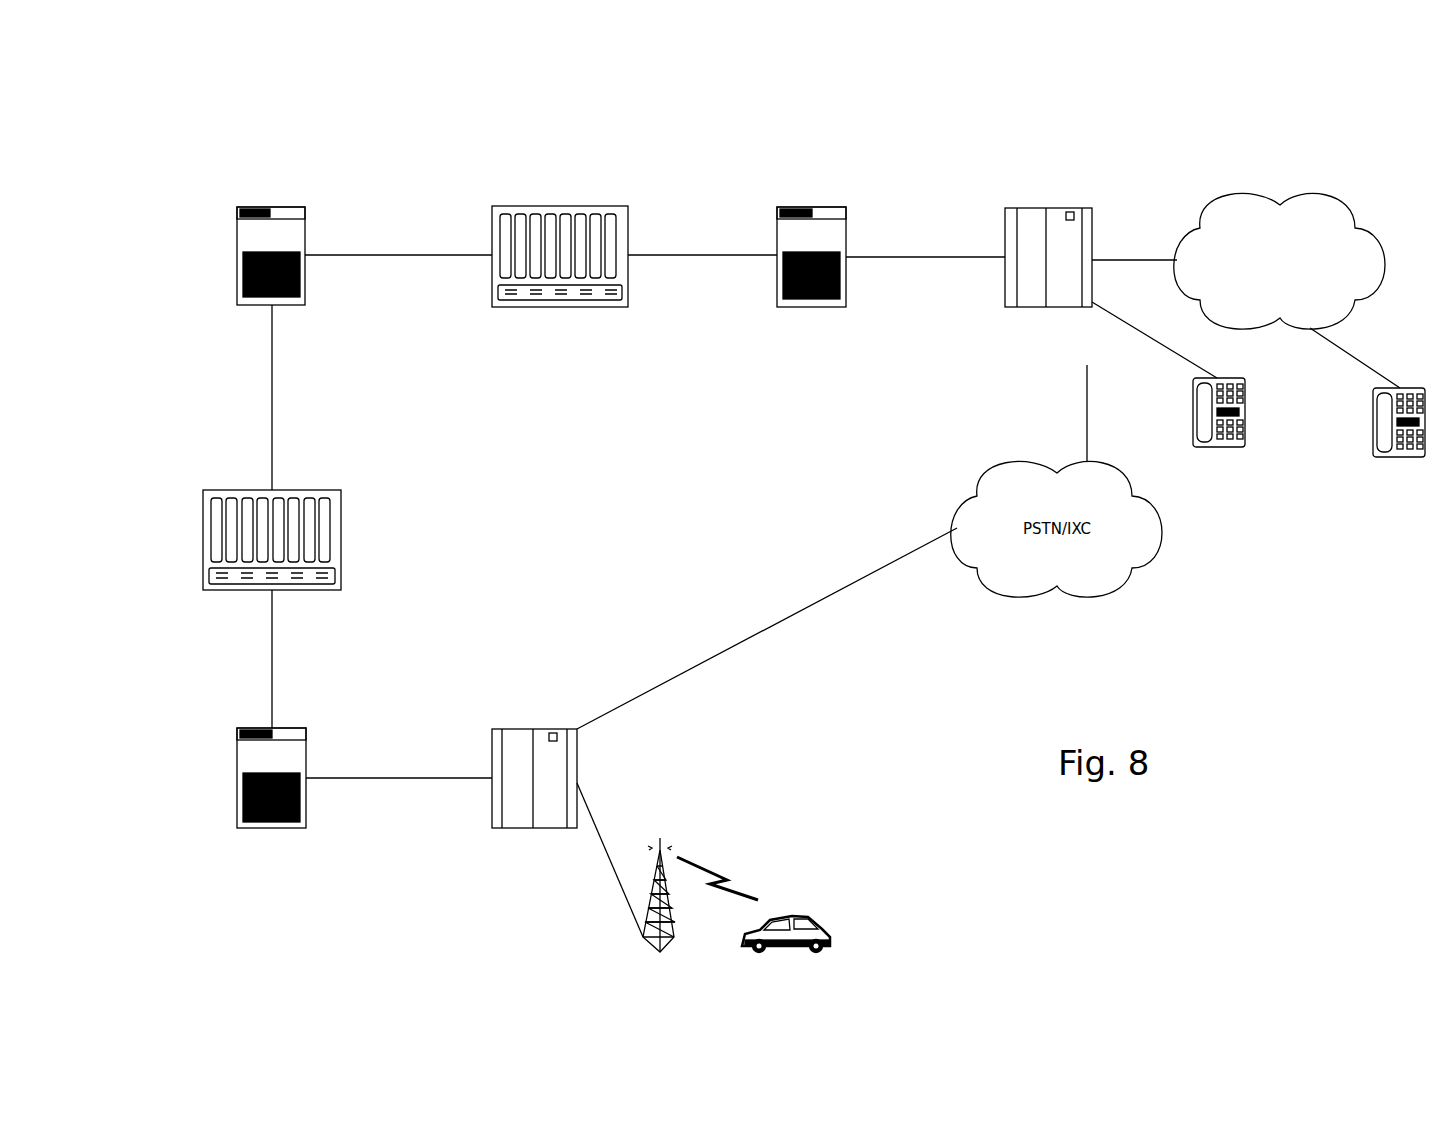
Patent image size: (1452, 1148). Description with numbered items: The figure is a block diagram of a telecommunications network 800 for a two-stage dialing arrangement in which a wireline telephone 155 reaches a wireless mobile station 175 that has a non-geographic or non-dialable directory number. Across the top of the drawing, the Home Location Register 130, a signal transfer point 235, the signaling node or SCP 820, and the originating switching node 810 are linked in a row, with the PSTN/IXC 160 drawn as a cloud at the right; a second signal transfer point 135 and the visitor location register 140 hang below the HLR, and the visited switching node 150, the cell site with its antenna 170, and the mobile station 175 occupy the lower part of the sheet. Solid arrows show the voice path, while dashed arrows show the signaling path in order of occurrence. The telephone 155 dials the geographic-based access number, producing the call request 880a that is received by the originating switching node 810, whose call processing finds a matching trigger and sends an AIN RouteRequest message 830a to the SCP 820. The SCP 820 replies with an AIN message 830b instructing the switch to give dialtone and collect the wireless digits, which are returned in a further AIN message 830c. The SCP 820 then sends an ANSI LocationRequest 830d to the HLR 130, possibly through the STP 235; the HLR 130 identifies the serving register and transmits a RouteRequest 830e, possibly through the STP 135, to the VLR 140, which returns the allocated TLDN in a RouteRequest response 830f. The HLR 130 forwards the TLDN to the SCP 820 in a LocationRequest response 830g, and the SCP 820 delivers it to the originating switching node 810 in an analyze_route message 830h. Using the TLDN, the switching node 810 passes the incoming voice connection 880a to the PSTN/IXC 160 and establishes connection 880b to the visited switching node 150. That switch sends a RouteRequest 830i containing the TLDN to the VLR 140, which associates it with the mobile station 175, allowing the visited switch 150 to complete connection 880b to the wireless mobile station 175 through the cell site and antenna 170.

The telecommunications network 800 is at (160, 200).
The Home Location Register (HLR) 130 is at (239, 209).
The signal transfer point (STP) 235 is at (504, 207).
The signaling node (SCP) 820 is at (784, 208).
The originating switching node (SSP) 810 is at (1019, 209).
The Public Switched Telephone Network (PSTN)/Inter-Exchange Carrier (IXC) 160 is at (1309, 197).
The telephone 155 is at (1245, 398).
The signal transfer point (STP) 135 is at (330, 491).
The visitor location register (VLR) 140 is at (237, 743).
The visited switching node (visited cellular switch) 150 is at (555, 733).
The cell site including antenna 170 is at (662, 846).
The wireless mobile station 175 is at (786, 922).
The AIN RouteRequest (info_analyze) message 830a is at (936, 207).
The AIN 0.1 message 830b is at (946, 233).
The AIN 0.1 message (collected digits) 830c is at (930, 275).
The ANSI-41 LocationRequest 830d is at (339, 214).
The RouteRequest 830e is at (305, 468).
The RouteRequest response message 830f is at (222, 696).
The LocationRequest response message 830g is at (470, 288).
The analyze_route message 830h is at (988, 300).
The RouteRequest 830i is at (330, 736).
The call request (first voice link) 880a is at (1110, 242).
The voice connection 880b is at (1100, 412).